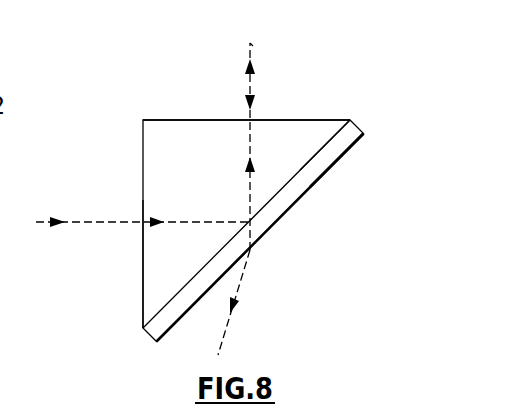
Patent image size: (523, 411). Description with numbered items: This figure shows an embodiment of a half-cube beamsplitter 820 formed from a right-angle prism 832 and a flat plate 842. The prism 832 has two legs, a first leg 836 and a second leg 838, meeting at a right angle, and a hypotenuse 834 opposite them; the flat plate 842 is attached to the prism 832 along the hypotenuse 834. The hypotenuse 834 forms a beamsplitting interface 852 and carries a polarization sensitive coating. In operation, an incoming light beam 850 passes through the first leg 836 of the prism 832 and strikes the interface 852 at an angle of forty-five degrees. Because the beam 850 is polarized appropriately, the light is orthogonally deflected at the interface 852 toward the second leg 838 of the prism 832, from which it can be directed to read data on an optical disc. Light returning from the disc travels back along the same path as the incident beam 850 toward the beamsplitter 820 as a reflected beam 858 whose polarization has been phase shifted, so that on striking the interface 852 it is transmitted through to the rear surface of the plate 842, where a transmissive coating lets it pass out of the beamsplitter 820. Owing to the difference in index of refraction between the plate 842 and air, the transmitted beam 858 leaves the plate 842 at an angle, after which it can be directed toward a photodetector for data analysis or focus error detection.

The half-cube beamsplitter 820 is at (273, 252).
The right-angle prism 832 is at (133, 158).
The hypotenuse 834 is at (272, 199).
The first leg 836 is at (143, 306).
The second leg 838 is at (320, 120).
The flat plate 842 is at (320, 160).
The beamsplitting interface 852 is at (334, 136).
The incoming light beam 850 is at (253, 46).
The reflected beam 858 is at (248, 101).